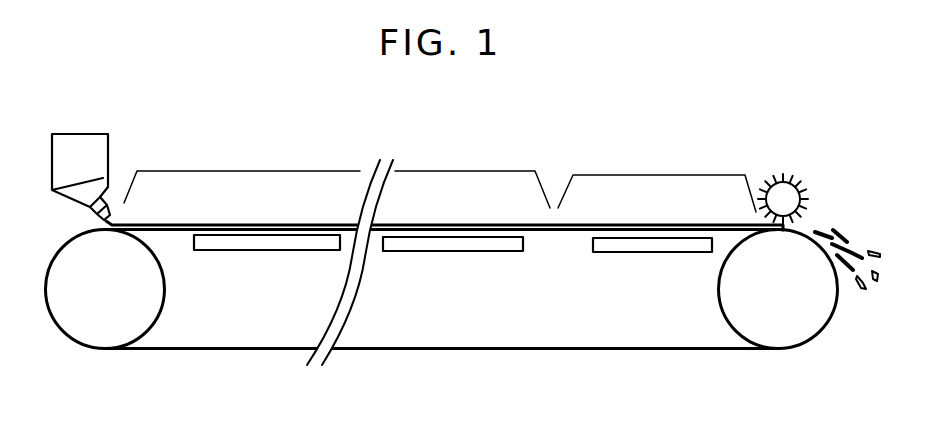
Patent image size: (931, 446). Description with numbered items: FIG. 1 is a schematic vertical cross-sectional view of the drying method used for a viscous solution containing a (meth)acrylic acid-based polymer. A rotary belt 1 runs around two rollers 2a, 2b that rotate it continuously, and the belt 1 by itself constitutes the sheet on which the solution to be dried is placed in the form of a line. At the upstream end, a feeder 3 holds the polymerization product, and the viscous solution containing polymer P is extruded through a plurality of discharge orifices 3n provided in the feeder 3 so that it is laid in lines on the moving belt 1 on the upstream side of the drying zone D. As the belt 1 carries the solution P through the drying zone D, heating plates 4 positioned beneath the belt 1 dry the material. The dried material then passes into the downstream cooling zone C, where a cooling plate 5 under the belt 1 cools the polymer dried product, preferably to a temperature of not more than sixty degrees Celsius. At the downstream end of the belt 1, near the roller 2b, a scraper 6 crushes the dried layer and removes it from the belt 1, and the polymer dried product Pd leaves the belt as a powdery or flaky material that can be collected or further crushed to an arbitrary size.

The belt 1 is at (607, 351).
The roller 2a is at (86, 332).
The roller 2b is at (812, 327).
The feeder of polymerization product 3 is at (78, 145).
The discharge orifices 3n is at (122, 203).
The heating plate 4 is at (468, 247).
The cooling plate 5 is at (652, 247).
The scraper 6 is at (787, 187).
The drying zone D is at (326, 178).
The cooling zone C is at (657, 182).
The viscous solution containing polymer P is at (177, 232).
The polymer dried product Pd is at (870, 253).